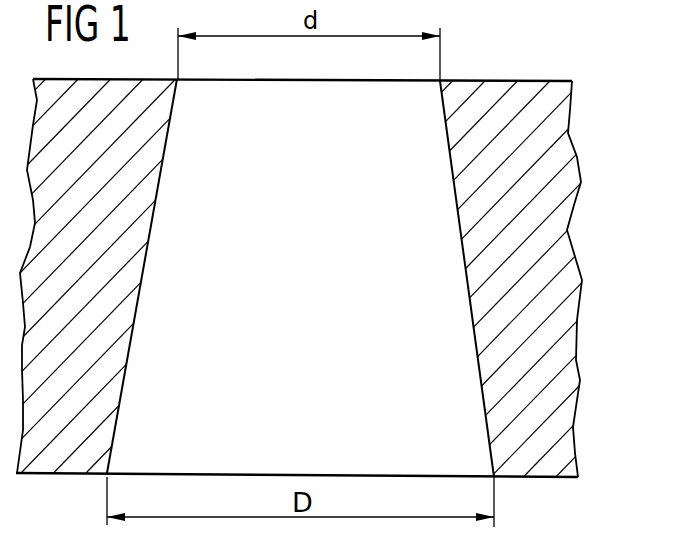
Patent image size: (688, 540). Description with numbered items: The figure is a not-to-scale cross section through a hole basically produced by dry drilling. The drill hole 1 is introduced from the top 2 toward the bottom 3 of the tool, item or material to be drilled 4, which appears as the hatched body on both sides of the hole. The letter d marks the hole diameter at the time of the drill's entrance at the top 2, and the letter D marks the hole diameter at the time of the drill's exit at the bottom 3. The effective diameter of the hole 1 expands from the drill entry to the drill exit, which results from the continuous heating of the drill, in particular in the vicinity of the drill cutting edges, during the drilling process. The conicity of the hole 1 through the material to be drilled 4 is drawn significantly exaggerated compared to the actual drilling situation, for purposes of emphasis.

The drill hole 1 is at (312, 302).
The top 2 is at (535, 80).
The bottom 3 is at (538, 478).
The material to be drilled 4 is at (575, 247).